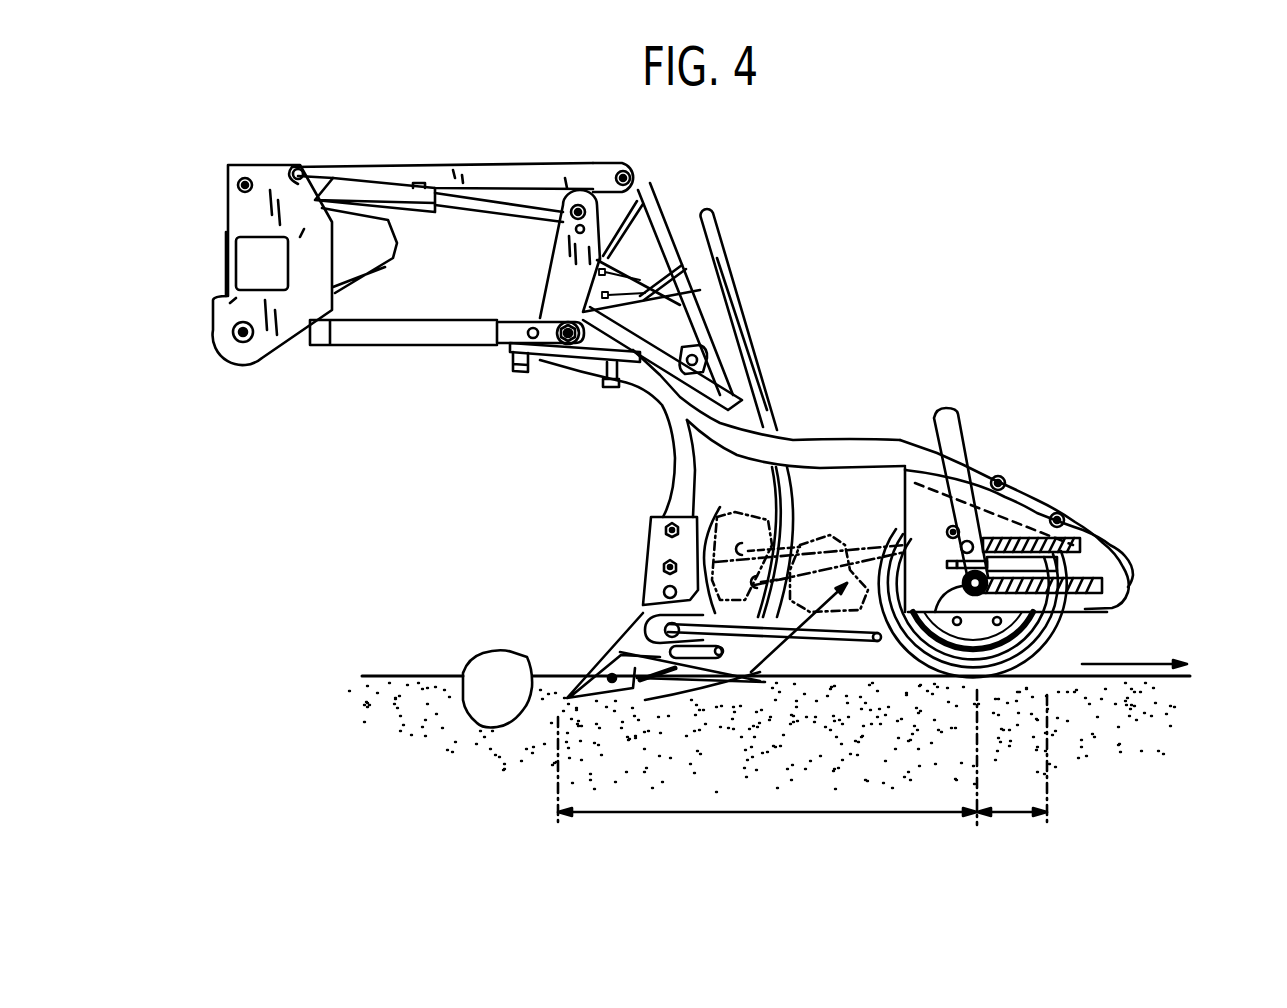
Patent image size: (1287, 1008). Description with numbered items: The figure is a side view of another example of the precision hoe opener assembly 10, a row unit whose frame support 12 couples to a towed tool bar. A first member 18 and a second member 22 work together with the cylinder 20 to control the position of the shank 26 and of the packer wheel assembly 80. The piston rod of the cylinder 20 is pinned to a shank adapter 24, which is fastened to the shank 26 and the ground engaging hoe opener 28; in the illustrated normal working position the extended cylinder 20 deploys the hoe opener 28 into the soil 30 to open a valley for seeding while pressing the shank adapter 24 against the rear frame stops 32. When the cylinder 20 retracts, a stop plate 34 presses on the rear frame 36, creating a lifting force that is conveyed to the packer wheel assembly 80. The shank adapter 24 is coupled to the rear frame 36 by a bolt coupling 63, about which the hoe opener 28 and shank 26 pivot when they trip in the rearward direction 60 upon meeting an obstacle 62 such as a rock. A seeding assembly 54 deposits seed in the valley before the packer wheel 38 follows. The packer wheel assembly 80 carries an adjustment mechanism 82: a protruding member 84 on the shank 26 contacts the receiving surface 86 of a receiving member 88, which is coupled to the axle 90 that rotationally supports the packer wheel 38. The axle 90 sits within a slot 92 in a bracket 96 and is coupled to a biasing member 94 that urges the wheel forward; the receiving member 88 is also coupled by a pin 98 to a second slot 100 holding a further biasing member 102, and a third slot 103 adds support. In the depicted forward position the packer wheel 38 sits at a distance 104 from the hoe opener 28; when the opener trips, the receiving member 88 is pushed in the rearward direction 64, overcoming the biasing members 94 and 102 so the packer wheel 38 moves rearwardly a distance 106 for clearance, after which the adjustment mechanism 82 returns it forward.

The precision hoe opener assembly 10 is at (340, 110).
The frame support 12 is at (231, 166).
The first member 18 is at (511, 176).
The cylinder 20 is at (392, 190).
The second member 22 is at (441, 333).
The shank adapter 24 is at (558, 280).
The shank 26 is at (668, 490).
The hoe opener 28 is at (623, 652).
The soil 30 is at (384, 684).
The rear frame stops 32 is at (690, 317).
The stop plate 34 is at (628, 376).
The rear frame 36 is at (647, 222).
The packer wheel 38 is at (1043, 650).
The seeding assembly 54 is at (768, 400).
The rearward direction 60 is at (762, 648).
The obstacle 62 is at (473, 708).
The bolt coupling 63 is at (563, 345).
The rearward direction of packer wheel 64 is at (1150, 663).
The packer wheel assembly 80 is at (1022, 430).
The adjustment mechanism 82 is at (972, 618).
The protruding member 84 is at (768, 517).
The receiving surface 86 is at (942, 488).
The receiving member 88 is at (968, 465).
The axle 90 is at (937, 630).
The slot 92 is at (1108, 612).
The biasing member 94 is at (1043, 583).
The bracket 96 is at (1125, 590).
The pin 98 is at (950, 530).
The second slot 100 is at (1085, 540).
The biasing member 102 is at (1012, 540).
The third slot 103 is at (1060, 570).
The distance 104 is at (764, 813).
The distance 106 is at (1010, 813).